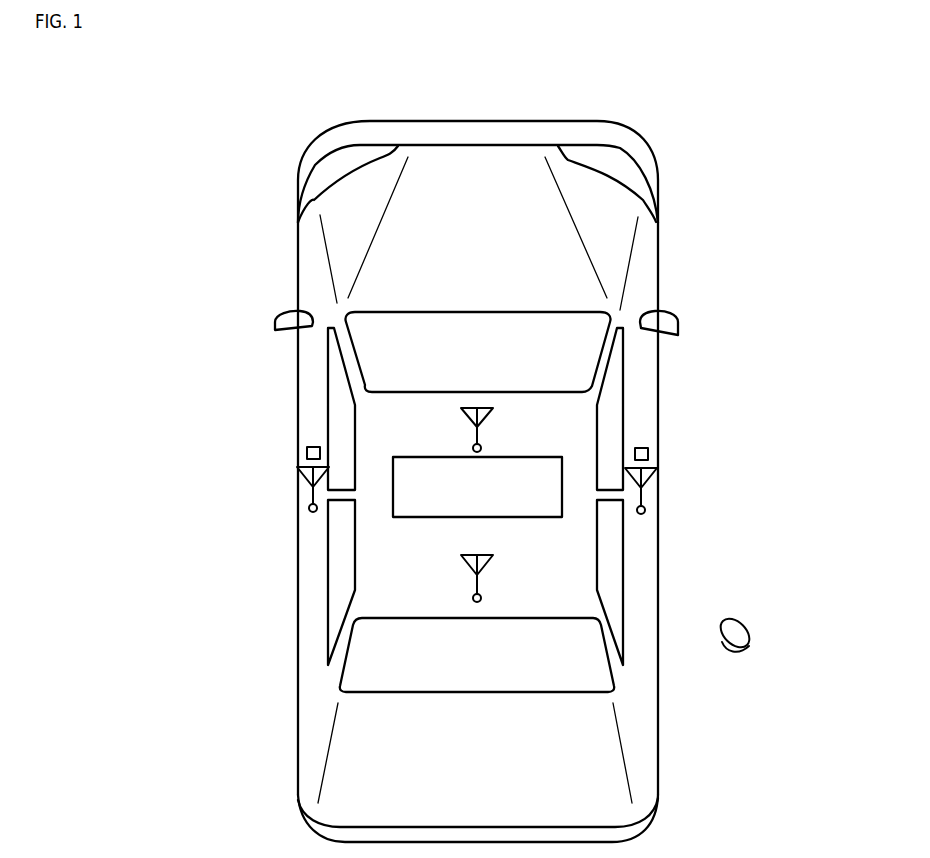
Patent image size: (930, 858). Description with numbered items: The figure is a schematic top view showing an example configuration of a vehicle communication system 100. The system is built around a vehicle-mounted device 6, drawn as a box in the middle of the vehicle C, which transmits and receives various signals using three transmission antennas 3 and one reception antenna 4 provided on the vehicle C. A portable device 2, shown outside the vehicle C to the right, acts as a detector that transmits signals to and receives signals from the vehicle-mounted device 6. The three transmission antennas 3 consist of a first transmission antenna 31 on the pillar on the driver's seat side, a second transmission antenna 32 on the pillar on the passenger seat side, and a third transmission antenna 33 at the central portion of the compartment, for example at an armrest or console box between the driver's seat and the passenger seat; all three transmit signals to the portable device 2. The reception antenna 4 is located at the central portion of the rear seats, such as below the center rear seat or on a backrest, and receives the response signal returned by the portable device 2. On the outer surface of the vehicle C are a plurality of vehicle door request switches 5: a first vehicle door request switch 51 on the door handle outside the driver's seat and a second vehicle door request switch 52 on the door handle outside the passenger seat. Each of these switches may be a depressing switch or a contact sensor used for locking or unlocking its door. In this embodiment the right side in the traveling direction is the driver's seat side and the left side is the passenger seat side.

The vehicle communication system 100 is at (811, 118).
The vehicle C is at (657, 178).
The portable device 2 is at (745, 621).
The transmission antennas 3 is at (474, 467).
The first transmission antenna 31 is at (657, 479).
The second transmission antenna 32 is at (299, 479).
The third transmission antenna 33 is at (493, 421).
The reception antenna 4 is at (490, 560).
The vehicle door request switches 5 is at (472, 429).
The first vehicle door request switch 51 is at (647, 451).
The second vehicle door request switch 52 is at (307, 451).
The vehicle-mounted device 6 is at (432, 457).